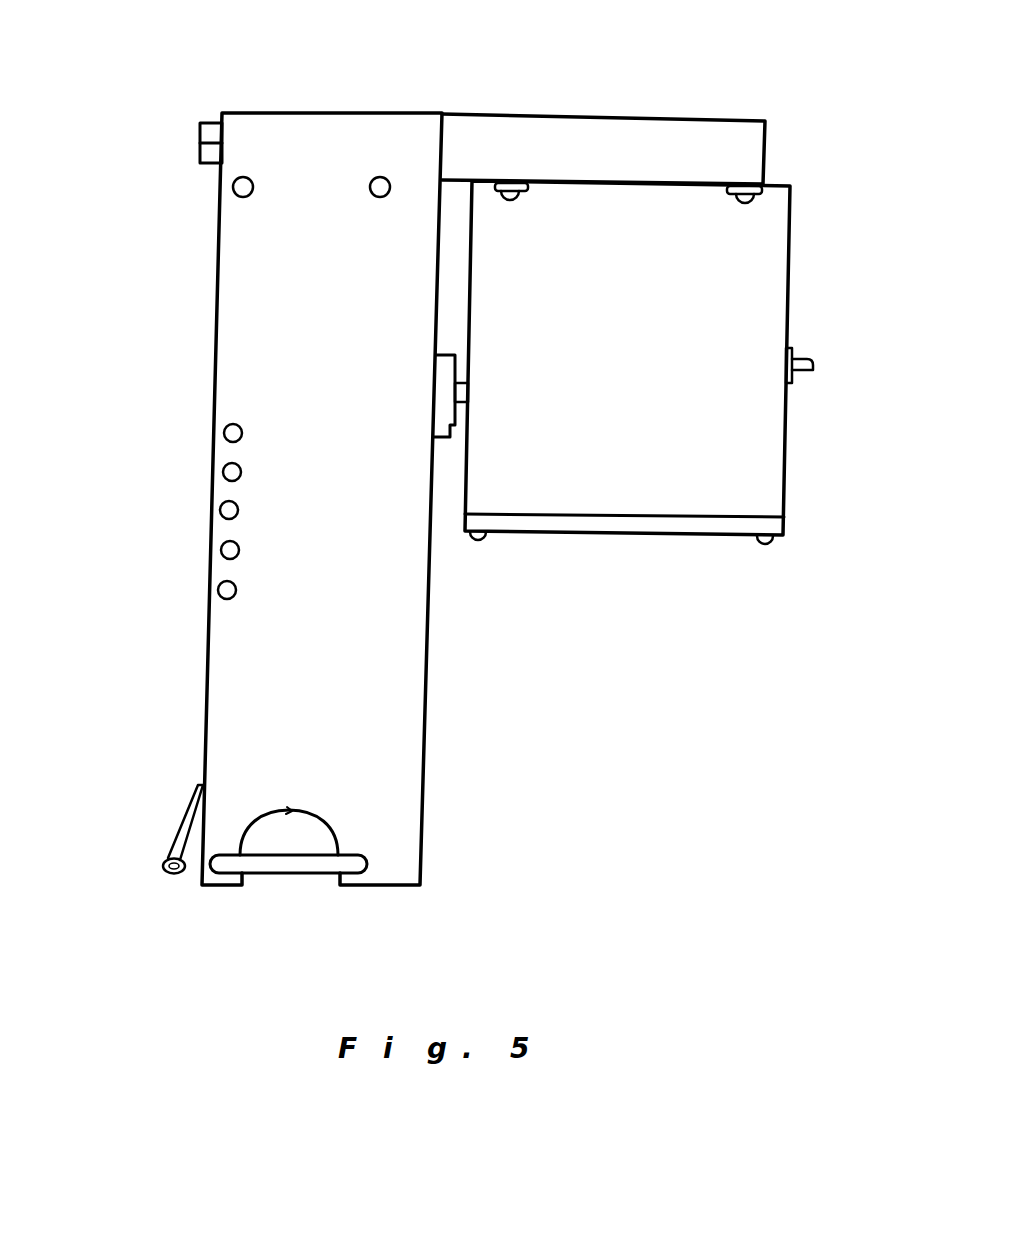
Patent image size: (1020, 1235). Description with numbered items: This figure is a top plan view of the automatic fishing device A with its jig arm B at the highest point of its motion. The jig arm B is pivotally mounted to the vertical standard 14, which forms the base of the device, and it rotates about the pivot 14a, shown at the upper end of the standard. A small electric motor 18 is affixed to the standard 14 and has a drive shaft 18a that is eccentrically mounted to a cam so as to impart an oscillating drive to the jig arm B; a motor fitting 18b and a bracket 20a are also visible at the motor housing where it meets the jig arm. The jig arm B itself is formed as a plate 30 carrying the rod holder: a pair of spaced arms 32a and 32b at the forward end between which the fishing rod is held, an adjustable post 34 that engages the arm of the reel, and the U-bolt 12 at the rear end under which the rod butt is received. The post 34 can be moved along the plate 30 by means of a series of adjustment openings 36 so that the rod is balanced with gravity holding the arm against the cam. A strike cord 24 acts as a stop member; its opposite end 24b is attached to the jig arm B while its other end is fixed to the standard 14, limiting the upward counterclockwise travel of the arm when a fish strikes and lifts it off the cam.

The U-bolt 12 is at (292, 886).
The vertical standard 14 is at (575, 117).
The pivot 14a is at (213, 122).
The electric motor 18 is at (690, 516).
The drive shaft 18a is at (466, 372).
The knob 18b is at (798, 376).
The mounting bracket 20a is at (441, 355).
The strike cord 24 is at (194, 822).
The opposite end of strike cord 24b is at (167, 877).
The plate 30 is at (183, 660).
The spaced arm 32a is at (238, 195).
The spaced arm 32b is at (375, 197).
The adjustable post 34 is at (224, 472).
The adjustment openings 36 is at (240, 440).
The automatic fishing device A is at (680, 405).
The jig arm B is at (294, 487).